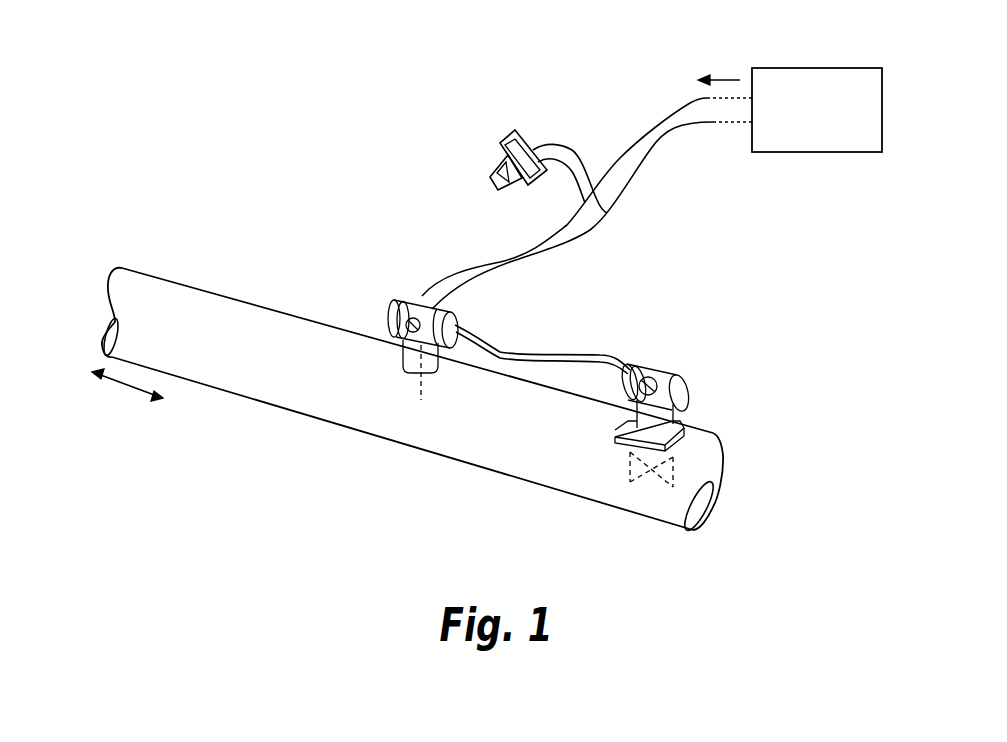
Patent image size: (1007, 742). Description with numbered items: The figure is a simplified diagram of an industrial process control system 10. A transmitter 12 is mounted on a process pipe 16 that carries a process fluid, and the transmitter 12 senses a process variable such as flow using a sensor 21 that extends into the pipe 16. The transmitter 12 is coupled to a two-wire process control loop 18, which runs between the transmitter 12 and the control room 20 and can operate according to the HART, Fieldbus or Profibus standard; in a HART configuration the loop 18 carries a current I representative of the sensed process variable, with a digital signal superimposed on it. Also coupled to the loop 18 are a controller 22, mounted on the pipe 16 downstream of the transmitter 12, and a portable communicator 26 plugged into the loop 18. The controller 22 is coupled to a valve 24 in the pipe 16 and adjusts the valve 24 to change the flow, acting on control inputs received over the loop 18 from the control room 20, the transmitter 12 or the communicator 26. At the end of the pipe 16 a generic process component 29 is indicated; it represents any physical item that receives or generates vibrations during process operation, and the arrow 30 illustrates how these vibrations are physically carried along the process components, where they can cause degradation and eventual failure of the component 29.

The process control system 10 is at (348, 110).
The transmitter 12 is at (413, 320).
The process pipe 16 is at (267, 405).
The two-wire process control loop 18 is at (500, 270).
The control room 20 is at (783, 152).
The sensor 21 is at (427, 382).
The controller 22 is at (672, 367).
The valve 24 is at (662, 480).
The communicator 26 is at (514, 130).
The process component 29 is at (108, 330).
The arrow 30 is at (123, 383).